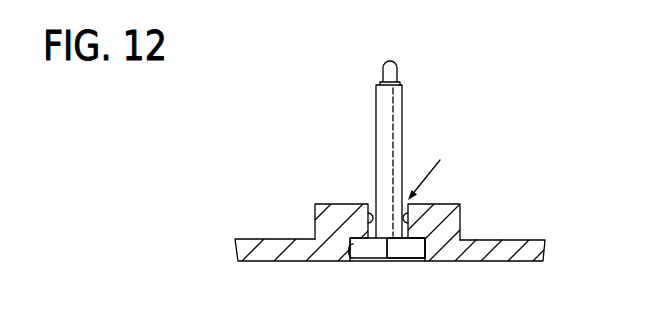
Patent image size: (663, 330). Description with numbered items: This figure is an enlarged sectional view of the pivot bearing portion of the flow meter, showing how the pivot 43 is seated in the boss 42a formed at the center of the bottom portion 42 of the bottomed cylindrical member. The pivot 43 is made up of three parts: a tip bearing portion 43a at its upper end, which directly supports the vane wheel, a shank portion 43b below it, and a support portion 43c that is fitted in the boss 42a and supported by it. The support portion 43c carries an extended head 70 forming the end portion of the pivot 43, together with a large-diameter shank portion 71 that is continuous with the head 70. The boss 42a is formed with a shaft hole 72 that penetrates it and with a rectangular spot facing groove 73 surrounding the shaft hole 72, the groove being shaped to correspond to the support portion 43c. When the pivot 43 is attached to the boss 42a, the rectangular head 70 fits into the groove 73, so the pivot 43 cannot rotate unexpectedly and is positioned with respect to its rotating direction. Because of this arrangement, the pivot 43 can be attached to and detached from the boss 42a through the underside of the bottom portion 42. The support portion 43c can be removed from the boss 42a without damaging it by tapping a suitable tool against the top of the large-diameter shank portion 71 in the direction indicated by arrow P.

The bottom portion 42 is at (504, 258).
The boss 42a is at (451, 212).
The pivot 43 is at (388, 180).
The tip bearing portion 43a is at (396, 70).
The shank portion 43b is at (398, 136).
The support portion 43c is at (408, 257).
The extended head 70 is at (363, 257).
The large-diameter shank portion 71 is at (367, 214).
The shaft hole 72 is at (416, 221).
The rectangular spot facing groove 73 is at (352, 258).
The arrow P is at (428, 168).